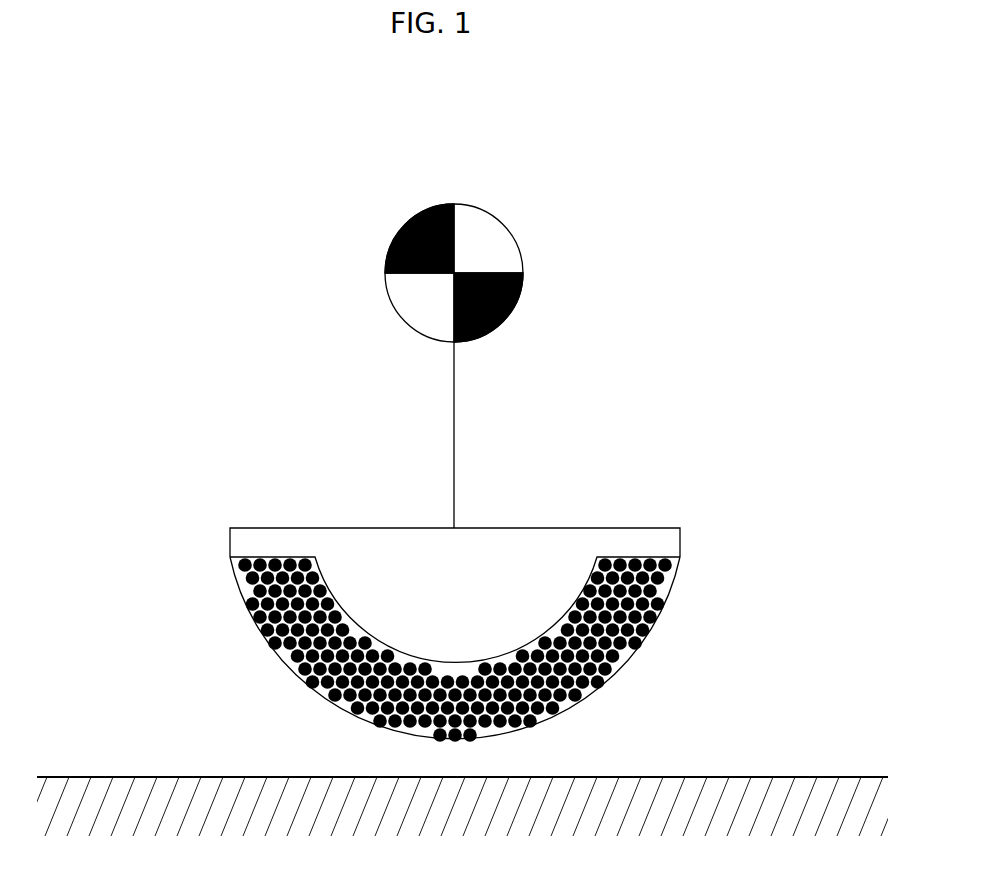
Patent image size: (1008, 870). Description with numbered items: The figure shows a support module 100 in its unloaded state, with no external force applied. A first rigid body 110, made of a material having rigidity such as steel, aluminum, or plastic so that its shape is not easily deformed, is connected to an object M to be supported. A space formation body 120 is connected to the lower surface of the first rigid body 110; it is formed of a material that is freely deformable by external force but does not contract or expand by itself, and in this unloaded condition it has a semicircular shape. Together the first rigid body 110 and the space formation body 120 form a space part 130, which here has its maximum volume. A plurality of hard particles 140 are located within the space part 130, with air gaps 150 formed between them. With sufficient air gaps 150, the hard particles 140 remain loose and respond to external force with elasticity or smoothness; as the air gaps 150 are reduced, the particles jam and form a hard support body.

The support module 100 is at (467, 153).
The object to be supported M is at (523, 265).
The first rigid body 110 is at (523, 538).
The space formation body 120 is at (677, 585).
The space part 130 is at (623, 665).
The hard particles 140 is at (603, 689).
The air gaps 150 is at (658, 622).